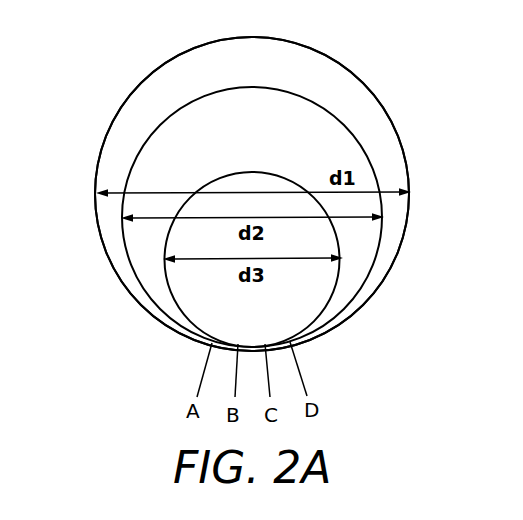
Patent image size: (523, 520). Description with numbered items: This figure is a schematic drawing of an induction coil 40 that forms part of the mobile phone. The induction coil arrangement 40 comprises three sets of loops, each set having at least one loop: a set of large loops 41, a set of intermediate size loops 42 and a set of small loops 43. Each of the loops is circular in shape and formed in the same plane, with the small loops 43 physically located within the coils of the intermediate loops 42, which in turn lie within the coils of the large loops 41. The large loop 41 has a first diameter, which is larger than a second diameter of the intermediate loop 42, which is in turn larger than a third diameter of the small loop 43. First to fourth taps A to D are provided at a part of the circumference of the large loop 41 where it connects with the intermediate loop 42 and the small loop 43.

The induction coil 40 is at (97, 86).
The set of large loops 41 is at (398, 132).
The set of intermediate size loops 42 is at (382, 247).
The set of small loops 43 is at (338, 290).